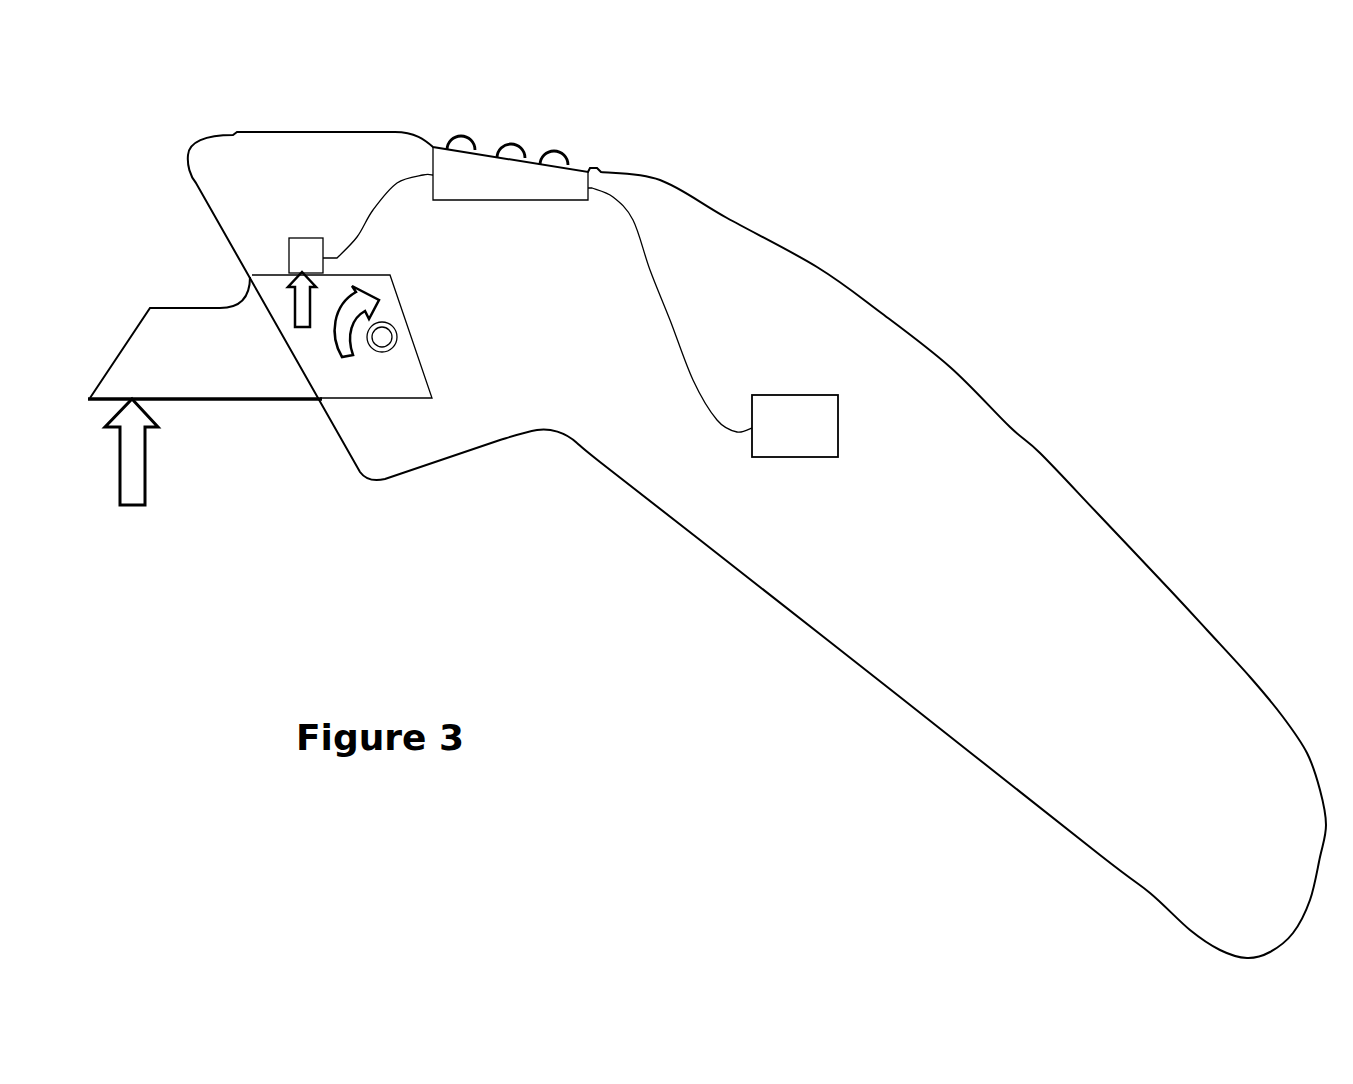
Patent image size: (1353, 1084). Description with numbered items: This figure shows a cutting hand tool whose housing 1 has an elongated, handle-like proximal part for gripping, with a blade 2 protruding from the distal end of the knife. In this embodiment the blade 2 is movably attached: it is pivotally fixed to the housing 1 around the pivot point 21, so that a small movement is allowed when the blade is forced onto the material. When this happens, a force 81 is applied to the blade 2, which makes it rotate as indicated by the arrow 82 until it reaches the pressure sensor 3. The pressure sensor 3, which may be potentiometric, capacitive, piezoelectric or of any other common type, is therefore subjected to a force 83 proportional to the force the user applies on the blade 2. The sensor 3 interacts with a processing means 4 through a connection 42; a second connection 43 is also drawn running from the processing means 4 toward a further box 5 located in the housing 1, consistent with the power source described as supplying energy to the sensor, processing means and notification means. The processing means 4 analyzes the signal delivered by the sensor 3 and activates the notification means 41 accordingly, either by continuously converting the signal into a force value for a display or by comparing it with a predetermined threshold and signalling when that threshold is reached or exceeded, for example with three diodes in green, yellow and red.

The housing 1 is at (975, 485).
The blade 2 is at (183, 342).
The pressure sensor 3 is at (298, 255).
The processing means 4 is at (563, 177).
The notification means 41 is at (457, 134).
The connection 42 is at (373, 210).
The connecting wire 43 is at (655, 277).
The battery 5 is at (803, 408).
The pivot point 21 is at (386, 341).
The arrow showing rotation 82 is at (352, 356).
The force on sensor 83 is at (300, 318).
The force 81 is at (138, 490).